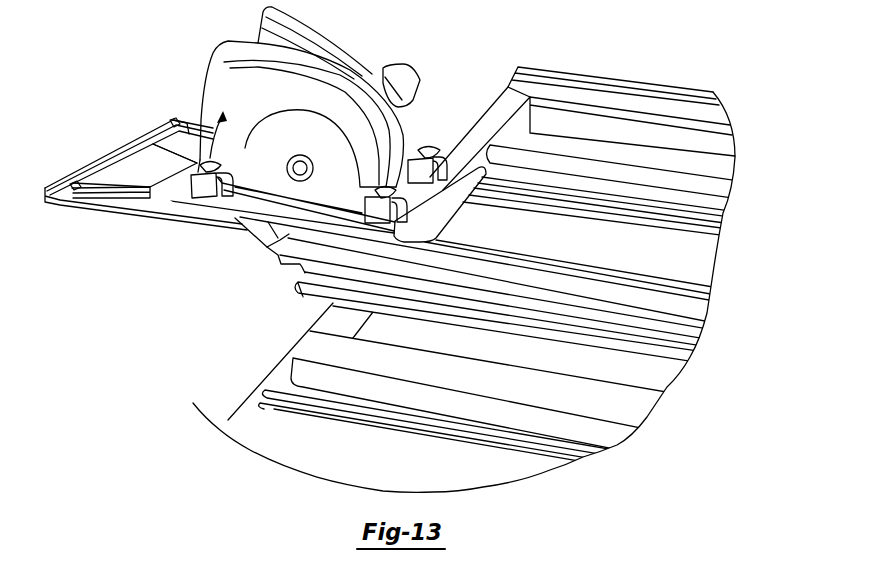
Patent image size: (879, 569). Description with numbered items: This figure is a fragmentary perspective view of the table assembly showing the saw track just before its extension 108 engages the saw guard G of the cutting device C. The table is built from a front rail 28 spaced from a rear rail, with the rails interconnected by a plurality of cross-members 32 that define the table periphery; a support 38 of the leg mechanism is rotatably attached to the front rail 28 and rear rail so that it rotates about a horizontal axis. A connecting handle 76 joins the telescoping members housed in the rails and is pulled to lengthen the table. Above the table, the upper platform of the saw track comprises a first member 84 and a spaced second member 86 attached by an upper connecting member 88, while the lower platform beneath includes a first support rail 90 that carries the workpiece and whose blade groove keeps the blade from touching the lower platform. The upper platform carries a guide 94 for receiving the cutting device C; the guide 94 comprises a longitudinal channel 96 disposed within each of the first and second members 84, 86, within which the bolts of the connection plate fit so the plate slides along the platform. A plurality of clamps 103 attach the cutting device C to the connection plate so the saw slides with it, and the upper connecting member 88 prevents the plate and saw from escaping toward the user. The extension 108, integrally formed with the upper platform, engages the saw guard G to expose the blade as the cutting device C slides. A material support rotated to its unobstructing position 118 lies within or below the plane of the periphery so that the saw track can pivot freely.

The front rail 28 is at (270, 340).
The cross-members 32 is at (637, 417).
The support 38 is at (545, 118).
The connecting handle 76 is at (547, 72).
The first member 84 is at (113, 207).
The second member 86 is at (188, 126).
The upper connecting member 88 is at (90, 165).
The first support rail 90 is at (663, 358).
The guide 94 is at (133, 180).
The longitudinal channel 96 is at (77, 183).
The clamps 103 is at (220, 185).
The extension 108 is at (278, 256).
The unobstructing position 118 is at (275, 387).
The cutting device C is at (263, 95).
The saw guard G is at (265, 247).